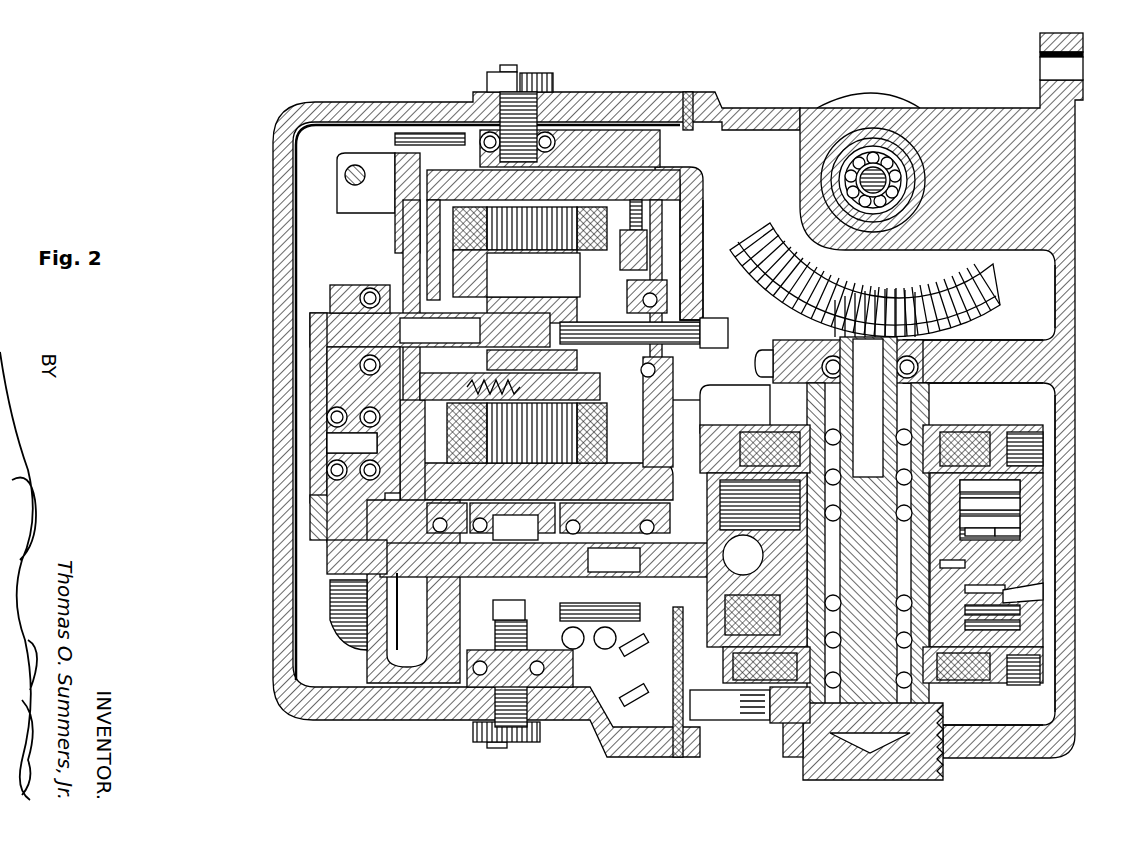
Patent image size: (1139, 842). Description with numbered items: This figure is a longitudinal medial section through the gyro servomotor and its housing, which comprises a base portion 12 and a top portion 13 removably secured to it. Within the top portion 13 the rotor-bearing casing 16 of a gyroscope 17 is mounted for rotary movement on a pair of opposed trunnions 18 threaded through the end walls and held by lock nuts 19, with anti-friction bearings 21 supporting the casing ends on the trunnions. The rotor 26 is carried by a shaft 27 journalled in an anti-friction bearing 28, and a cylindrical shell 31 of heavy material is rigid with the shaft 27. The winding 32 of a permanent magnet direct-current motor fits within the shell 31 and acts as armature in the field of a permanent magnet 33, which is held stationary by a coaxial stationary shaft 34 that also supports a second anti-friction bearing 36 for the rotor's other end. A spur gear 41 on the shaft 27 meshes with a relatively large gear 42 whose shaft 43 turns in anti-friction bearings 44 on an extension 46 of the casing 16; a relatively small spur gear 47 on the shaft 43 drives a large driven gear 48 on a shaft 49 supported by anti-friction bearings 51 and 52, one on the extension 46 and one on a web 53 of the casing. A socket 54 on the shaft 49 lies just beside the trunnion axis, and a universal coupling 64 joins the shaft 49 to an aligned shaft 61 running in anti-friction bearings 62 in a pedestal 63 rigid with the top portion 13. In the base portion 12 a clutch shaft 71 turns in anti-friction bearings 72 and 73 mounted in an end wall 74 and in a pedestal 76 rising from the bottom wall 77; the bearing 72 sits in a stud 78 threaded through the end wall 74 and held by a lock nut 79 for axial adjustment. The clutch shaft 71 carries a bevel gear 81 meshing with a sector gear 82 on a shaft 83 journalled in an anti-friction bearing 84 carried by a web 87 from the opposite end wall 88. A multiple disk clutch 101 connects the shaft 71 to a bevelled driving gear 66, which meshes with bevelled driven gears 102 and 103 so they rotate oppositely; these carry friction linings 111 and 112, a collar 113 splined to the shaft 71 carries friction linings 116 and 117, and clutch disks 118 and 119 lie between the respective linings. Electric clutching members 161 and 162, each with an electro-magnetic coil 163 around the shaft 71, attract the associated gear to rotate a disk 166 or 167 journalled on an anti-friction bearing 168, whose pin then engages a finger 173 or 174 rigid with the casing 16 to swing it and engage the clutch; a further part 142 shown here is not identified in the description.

The base portion 12 is at (1072, 430).
The top portion 13 is at (275, 268).
The rotor-bearing casing 16 is at (607, 168).
The gyroscope 17 is at (700, 225).
The trunnions 18 is at (506, 70).
The lock nuts 19 is at (545, 73).
The anti-friction bearings 21 is at (552, 122).
The rotor 26 is at (395, 180).
The shaft 27 is at (482, 356).
The anti-friction bearing 28 is at (345, 300).
The cylindrical shell 31 is at (690, 188).
The winding 32 is at (600, 447).
The permanent magnet 33 is at (510, 315).
The stationary shaft 34 is at (705, 325).
The second anti-friction bearing 36 is at (680, 405).
The spur gear 41 is at (335, 322).
The relatively large gear 42 is at (318, 352).
The shaft 43 is at (330, 440).
The anti-friction bearings 44 is at (330, 412).
The extension 46 is at (340, 483).
The relatively small spur gear 47 is at (455, 492).
The large driven gear 48 is at (397, 660).
The shaft 49 is at (370, 558).
The anti-friction bearing 51 is at (360, 595).
The anti-friction bearing 52 is at (473, 650).
The web 53 is at (440, 700).
The socket 54 is at (483, 595).
The shaft 61 is at (545, 540).
The anti-friction bearings 62 is at (575, 607).
The pedestal 63 is at (605, 637).
The universal coupling 64 is at (508, 537).
The driving gear 66 is at (703, 500).
The clutch shaft 71 is at (855, 397).
The anti-friction bearing 72 is at (805, 742).
The anti-friction bearing 73 is at (918, 360).
The end wall 74 is at (990, 740).
The pedestal 76 is at (1005, 360).
The bottom wall 77 is at (1060, 313).
The stud 78 is at (845, 762).
The lock nut 79 is at (933, 782).
The bevel gear 81 is at (860, 300).
The sector gear 82 is at (990, 284).
The shaft 83 is at (876, 166).
The anti-friction bearing 84 is at (906, 162).
The web 87 is at (1045, 200).
The end wall 88 is at (803, 115).
The multiple disk clutch 101 is at (1025, 495).
The bevelled driven gear 102 is at (1035, 592).
The bevelled driven gear 103 is at (1025, 521).
The friction lining 111 is at (1020, 626).
The friction lining 112 is at (1020, 486).
The collar 113 is at (960, 566).
The friction lining 116 is at (995, 590).
The friction lining 117 is at (982, 536).
The clutch disks 118 is at (1020, 611).
The clutch disks 119 is at (1030, 505).
The spring 142 is at (1005, 536).
The electric clutching member 161 is at (1012, 687).
The electric clutching member 162 is at (1020, 432).
The electro-magnetic coil 163 is at (950, 690).
The disk 166 is at (978, 688).
The disk 167 is at (962, 432).
The anti-friction bearing 168 is at (800, 712).
The finger 173 is at (738, 712).
The finger 174 is at (730, 397).